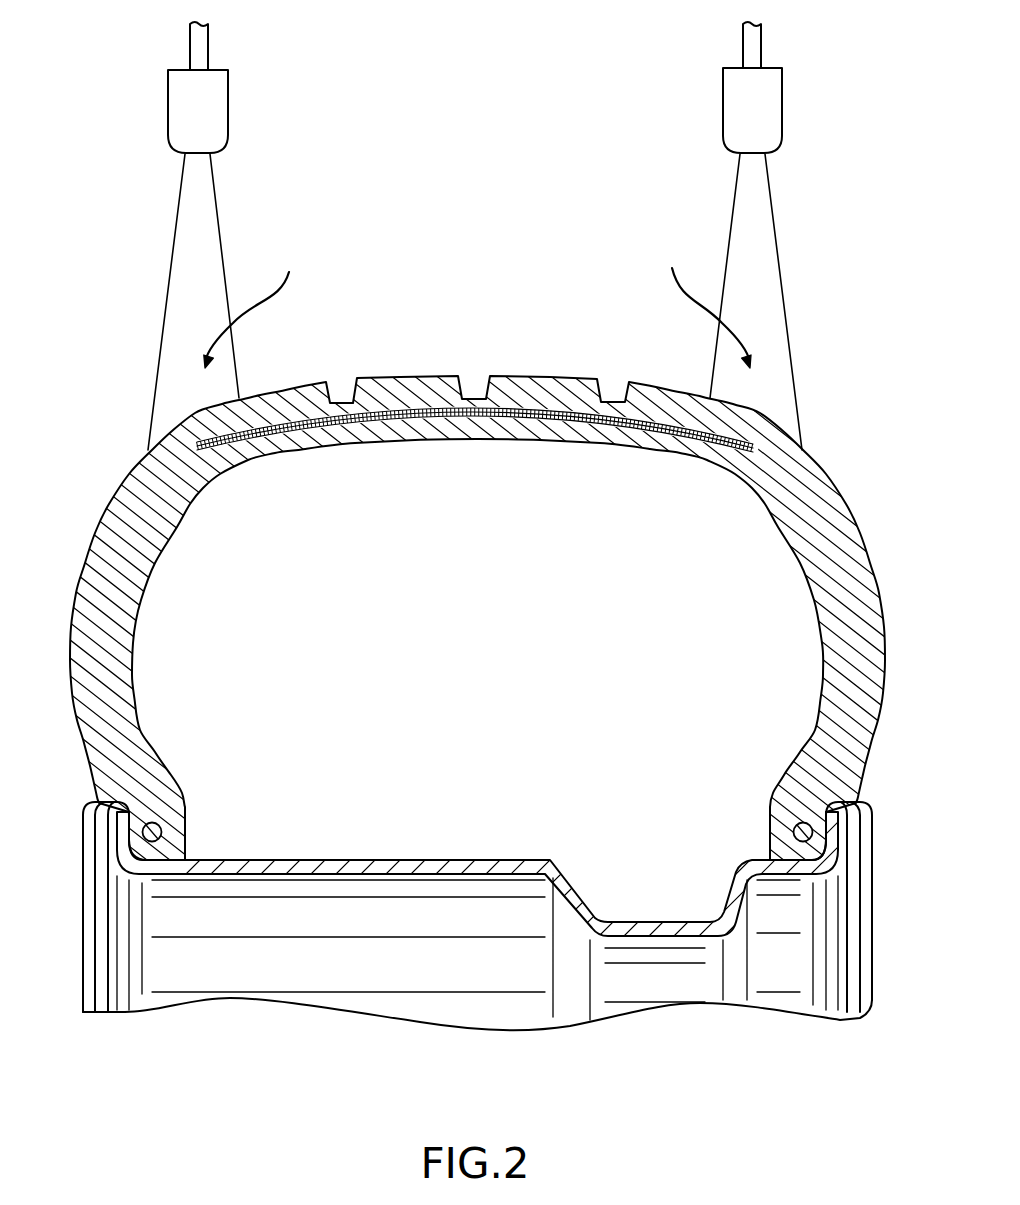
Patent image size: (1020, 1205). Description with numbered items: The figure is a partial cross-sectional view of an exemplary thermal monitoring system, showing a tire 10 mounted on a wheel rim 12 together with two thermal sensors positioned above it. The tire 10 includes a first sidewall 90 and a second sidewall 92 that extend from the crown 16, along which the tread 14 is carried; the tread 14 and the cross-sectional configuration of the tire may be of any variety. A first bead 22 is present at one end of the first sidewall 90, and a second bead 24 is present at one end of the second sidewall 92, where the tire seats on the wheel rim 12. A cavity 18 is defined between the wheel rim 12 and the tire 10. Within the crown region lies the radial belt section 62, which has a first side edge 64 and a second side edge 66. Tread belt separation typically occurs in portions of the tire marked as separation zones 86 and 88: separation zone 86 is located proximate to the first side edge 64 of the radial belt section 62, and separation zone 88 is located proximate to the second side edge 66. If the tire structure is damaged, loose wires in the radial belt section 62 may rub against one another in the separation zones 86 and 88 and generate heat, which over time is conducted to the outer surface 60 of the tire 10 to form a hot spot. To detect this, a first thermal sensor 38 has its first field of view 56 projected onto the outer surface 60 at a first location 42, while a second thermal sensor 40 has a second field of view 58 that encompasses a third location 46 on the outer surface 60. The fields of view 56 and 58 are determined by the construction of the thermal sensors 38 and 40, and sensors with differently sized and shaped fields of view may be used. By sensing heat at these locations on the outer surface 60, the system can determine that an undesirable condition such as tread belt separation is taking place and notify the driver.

The tire 10 is at (761, 411).
The wheel rim 12 is at (413, 858).
The tread 14 is at (470, 388).
The crown 16 is at (550, 377).
The cavity 18 is at (487, 669).
The first bead 22 is at (803, 804).
The second bead 24 is at (150, 810).
The first thermal sensor 38 is at (737, 102).
The second thermal sensor 40 is at (216, 104).
The first location 42 is at (703, 304).
The third location 46 is at (257, 307).
The first field of view 56 is at (730, 222).
The second field of view 58 is at (223, 222).
The outer surface 60 is at (298, 391).
The radial belt section 62 is at (361, 445).
The first side edge 64 is at (766, 457).
The second side edge 66 is at (192, 458).
The separation zone 86 is at (787, 437).
The separation zone 88 is at (168, 437).
The first sidewall 90 is at (885, 617).
The second sidewall 92 is at (70, 660).